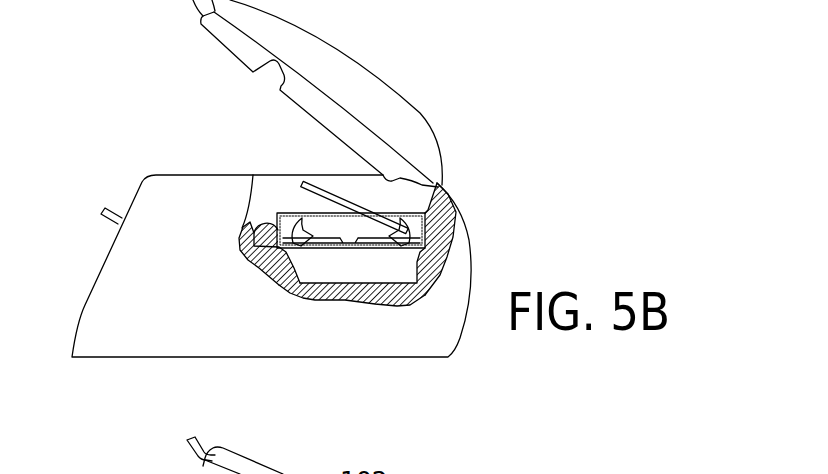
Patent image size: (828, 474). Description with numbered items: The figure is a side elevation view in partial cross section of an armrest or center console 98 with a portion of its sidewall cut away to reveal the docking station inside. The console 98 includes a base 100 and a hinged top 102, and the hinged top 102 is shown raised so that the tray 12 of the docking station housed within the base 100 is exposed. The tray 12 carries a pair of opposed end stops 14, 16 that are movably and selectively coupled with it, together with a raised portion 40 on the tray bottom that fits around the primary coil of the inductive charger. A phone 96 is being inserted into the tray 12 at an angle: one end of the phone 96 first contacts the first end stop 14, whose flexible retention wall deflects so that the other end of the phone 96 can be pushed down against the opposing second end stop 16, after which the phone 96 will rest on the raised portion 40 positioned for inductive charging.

The tray 12 is at (243, 232).
The first end stop 14 is at (456, 209).
The second end stop 16 is at (276, 285).
The raised portion 40 is at (350, 238).
The phone 96 is at (313, 187).
The armrest or center console 98 is at (530, 79).
The base 100 is at (466, 256).
The hinged top 102 is at (313, 45).